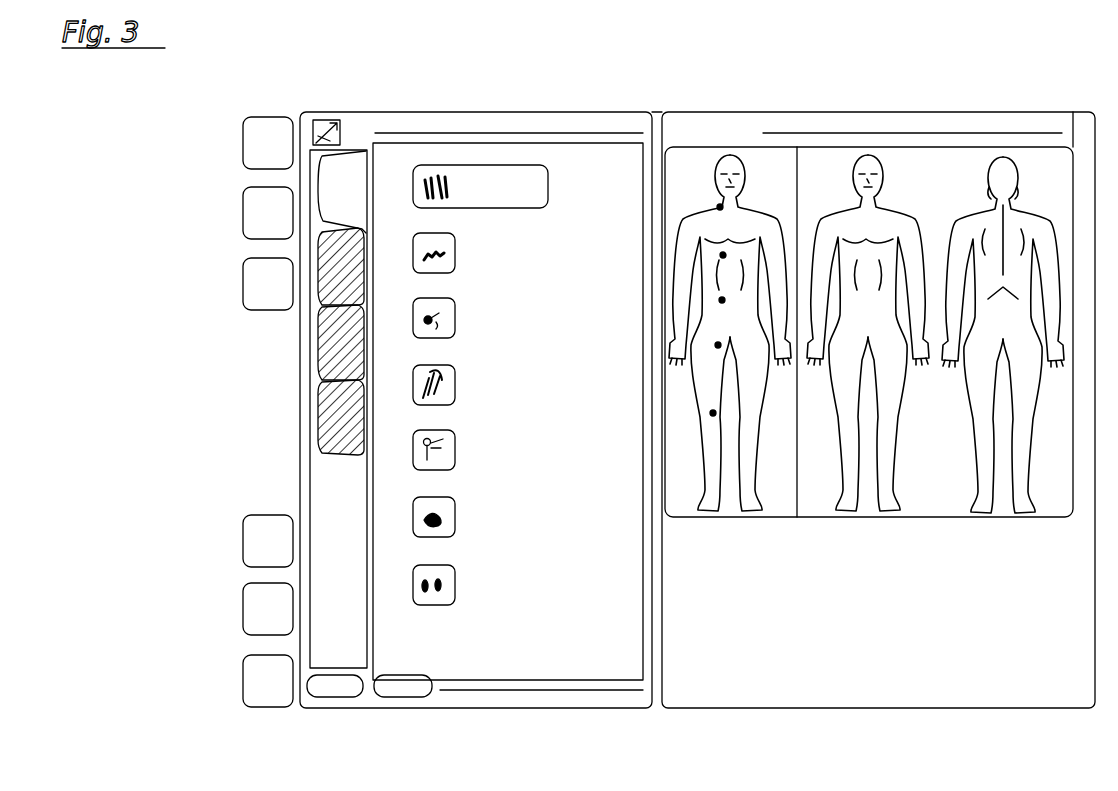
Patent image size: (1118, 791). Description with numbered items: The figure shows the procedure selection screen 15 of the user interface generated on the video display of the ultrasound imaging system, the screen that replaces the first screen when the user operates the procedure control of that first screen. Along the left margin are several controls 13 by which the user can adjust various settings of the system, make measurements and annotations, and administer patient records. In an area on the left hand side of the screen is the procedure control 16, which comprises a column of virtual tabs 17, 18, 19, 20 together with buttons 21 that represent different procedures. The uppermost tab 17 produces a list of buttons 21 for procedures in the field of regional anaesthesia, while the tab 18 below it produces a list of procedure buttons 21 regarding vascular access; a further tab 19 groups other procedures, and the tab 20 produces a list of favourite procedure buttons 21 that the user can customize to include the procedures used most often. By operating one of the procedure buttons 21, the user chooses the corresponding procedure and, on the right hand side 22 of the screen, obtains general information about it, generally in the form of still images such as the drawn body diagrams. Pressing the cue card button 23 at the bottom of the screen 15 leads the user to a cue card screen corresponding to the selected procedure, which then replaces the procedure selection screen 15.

The control 13 is at (260, 146).
The procedure selection screen 15 is at (724, 133).
The procedure control 16 is at (650, 717).
The uppermost tab 17 is at (343, 185).
The tab 18 is at (332, 290).
The tab 19 is at (332, 352).
The tab 20 is at (332, 430).
The procedure button 21 is at (548, 186).
The right hand side of the screen 22 is at (1095, 717).
The cue card button 23 is at (398, 690).